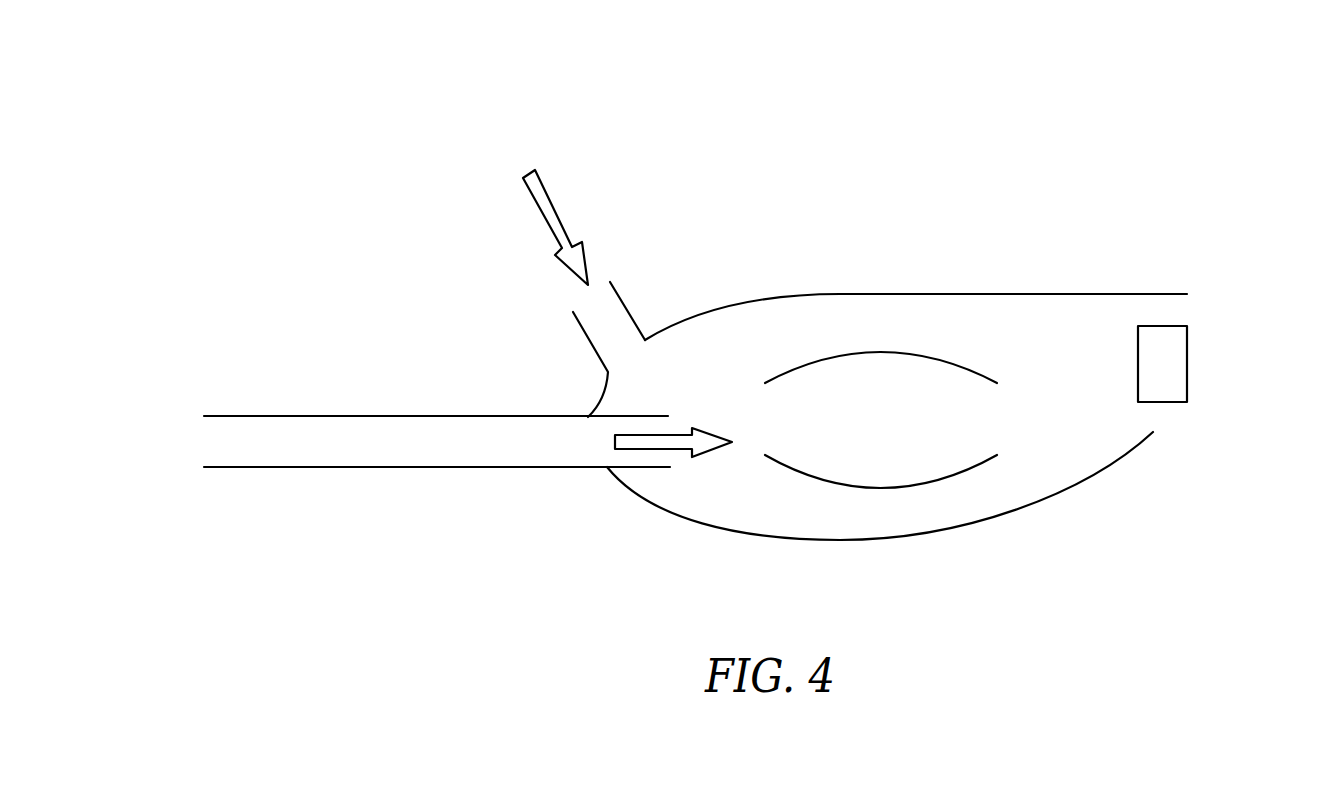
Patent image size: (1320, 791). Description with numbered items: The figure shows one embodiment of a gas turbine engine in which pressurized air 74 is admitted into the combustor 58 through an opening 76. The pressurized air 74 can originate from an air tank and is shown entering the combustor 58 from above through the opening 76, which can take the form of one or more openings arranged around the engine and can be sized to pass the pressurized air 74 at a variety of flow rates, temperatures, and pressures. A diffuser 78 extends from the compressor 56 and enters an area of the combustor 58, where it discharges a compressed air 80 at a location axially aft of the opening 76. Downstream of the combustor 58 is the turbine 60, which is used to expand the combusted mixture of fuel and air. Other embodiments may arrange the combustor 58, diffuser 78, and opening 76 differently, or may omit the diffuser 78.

The compressor 56 is at (381, 388).
The combustor 58 is at (1112, 139).
The turbine 60 is at (1238, 292).
The pressurized air 74 is at (555, 208).
The opening 76 is at (622, 350).
The diffuser 78 is at (628, 468).
The compressed air 80 is at (662, 452).